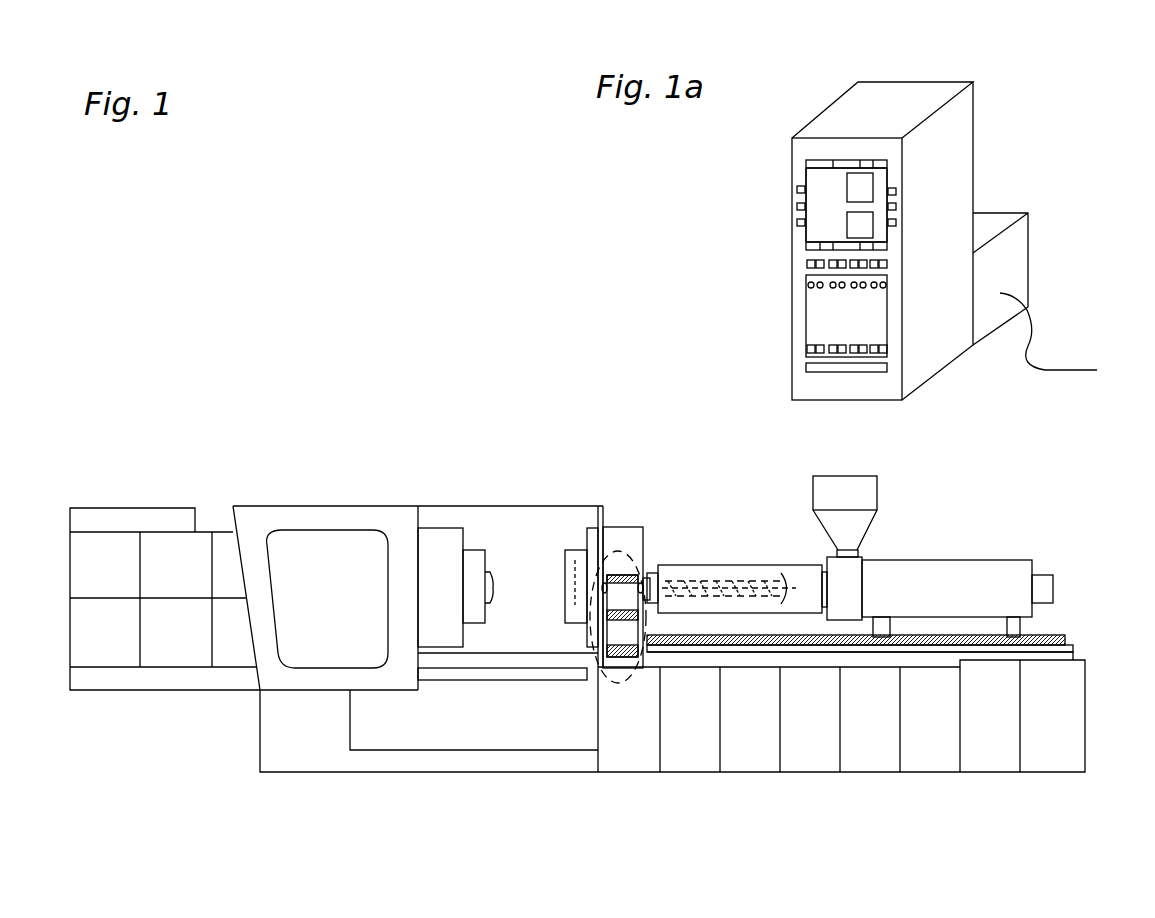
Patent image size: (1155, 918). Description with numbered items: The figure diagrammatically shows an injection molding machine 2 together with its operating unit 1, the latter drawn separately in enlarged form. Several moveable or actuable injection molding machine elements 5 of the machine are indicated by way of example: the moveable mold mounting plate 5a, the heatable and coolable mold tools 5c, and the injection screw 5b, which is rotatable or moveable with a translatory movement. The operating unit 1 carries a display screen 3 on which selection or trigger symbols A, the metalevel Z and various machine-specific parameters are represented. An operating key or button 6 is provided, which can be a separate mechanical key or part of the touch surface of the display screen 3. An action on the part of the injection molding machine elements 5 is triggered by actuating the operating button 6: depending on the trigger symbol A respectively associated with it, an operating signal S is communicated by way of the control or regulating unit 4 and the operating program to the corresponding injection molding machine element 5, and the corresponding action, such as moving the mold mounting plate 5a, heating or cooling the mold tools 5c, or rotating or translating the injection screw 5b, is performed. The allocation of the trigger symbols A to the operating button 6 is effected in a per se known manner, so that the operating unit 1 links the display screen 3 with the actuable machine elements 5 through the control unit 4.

In FIG. 1, the operating unit 1 is at (628, 552).
In FIG. 1a, the operating unit 1 is at (977, 77).
In FIG. 1, the injection molding machine 2 is at (340, 350).
In FIG. 1a, the display screen 3 is at (827, 197).
In FIG. 1a, the control or regulating unit 4 is at (985, 230).
In FIG. 1, the injection molding machine elements 5 is at (657, 810).
In FIG. 1, the moveable mold mounting plate 5a is at (437, 620).
In FIG. 1, the injection screw 5b is at (705, 598).
In FIG. 1, the mold tools 5c is at (473, 605).
In FIG. 1a, the operating key or button 6 is at (825, 260).
In FIG. 1a, the trigger symbol A is at (806, 251).
In FIG. 1a, the operating signal S is at (1032, 327).
In FIG. 1a, the metalevel Z is at (806, 165).